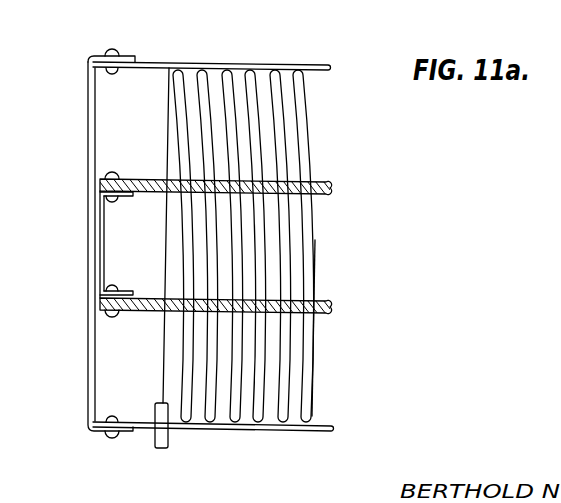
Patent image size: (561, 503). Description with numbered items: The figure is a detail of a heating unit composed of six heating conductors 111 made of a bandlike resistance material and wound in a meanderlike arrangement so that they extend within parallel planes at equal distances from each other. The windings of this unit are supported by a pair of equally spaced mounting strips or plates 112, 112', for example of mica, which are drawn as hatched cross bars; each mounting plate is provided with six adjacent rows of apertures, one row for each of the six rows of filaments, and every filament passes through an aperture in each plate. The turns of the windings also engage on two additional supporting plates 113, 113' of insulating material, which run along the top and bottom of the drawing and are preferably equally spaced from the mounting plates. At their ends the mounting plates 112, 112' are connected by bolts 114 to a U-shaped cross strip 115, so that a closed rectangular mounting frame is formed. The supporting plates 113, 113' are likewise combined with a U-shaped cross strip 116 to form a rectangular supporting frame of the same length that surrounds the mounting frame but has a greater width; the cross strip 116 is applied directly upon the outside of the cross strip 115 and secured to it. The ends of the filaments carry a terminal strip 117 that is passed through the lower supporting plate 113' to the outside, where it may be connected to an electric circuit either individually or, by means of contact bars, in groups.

The heating conductors 111 is at (313, 361).
The mounting strip 112 is at (215, 159).
The mounting strip 112' is at (215, 329).
The supporting plate 113 is at (212, 44).
The supporting plate 113' is at (213, 447).
The bolt 114 is at (116, 198).
The U-shaped cross strip 115 is at (89, 274).
The U-shaped cross strip 116 is at (89, 114).
The terminal strip 117 is at (163, 443).